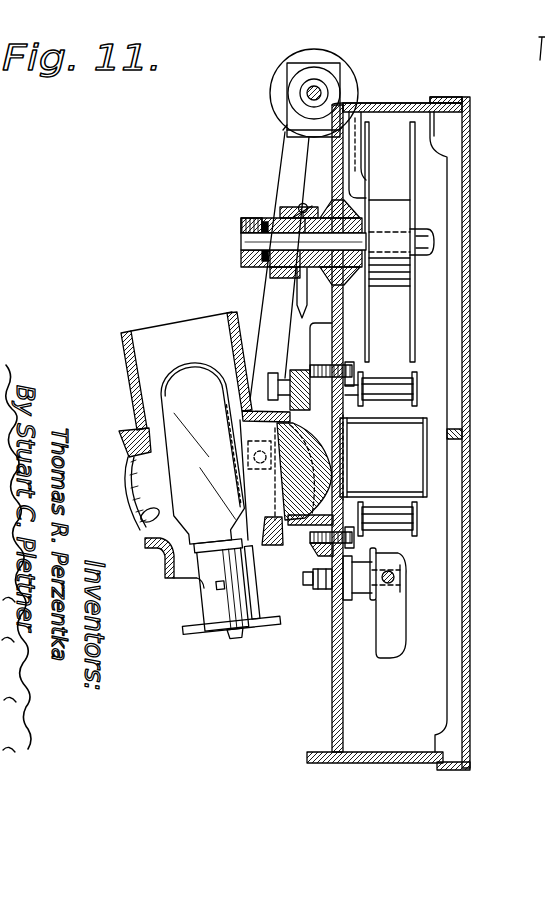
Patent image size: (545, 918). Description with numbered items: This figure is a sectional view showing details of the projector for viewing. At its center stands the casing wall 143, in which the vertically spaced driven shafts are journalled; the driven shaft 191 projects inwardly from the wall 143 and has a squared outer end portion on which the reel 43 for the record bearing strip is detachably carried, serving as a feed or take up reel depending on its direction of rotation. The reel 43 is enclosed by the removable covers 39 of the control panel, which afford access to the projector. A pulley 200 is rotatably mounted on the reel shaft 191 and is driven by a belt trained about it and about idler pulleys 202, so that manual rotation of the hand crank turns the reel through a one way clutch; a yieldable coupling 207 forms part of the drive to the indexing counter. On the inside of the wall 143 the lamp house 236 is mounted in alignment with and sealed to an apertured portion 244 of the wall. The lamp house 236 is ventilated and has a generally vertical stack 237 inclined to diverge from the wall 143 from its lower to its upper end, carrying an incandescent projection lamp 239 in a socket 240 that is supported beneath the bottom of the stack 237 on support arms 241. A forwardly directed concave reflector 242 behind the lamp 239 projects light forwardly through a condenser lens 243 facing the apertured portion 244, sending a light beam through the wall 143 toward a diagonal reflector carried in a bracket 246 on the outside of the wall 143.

The removable end plates or covers 39 is at (470, 320).
The reel 43 is at (414, 340).
The wall 143 is at (332, 647).
The driven shaft 191 is at (433, 240).
The pulley 200 is at (302, 306).
The idler pulleys 202 is at (293, 211).
The yieldable coupling 207 is at (304, 54).
The lamp house 236 is at (163, 562).
The stack 237 is at (128, 375).
The incandescent projection lamp 239 is at (172, 378).
The socket 240 is at (212, 600).
The support arms 241 is at (292, 591).
The concave reflector 242 is at (150, 516).
The condenser lens 243 is at (320, 478).
The apertured portion 244 is at (340, 420).
The bracket 246 is at (418, 418).